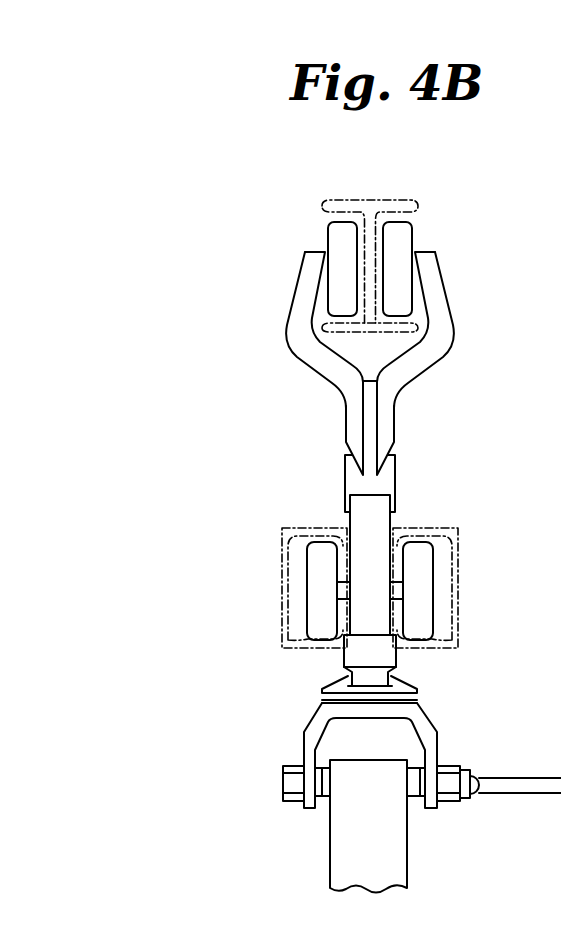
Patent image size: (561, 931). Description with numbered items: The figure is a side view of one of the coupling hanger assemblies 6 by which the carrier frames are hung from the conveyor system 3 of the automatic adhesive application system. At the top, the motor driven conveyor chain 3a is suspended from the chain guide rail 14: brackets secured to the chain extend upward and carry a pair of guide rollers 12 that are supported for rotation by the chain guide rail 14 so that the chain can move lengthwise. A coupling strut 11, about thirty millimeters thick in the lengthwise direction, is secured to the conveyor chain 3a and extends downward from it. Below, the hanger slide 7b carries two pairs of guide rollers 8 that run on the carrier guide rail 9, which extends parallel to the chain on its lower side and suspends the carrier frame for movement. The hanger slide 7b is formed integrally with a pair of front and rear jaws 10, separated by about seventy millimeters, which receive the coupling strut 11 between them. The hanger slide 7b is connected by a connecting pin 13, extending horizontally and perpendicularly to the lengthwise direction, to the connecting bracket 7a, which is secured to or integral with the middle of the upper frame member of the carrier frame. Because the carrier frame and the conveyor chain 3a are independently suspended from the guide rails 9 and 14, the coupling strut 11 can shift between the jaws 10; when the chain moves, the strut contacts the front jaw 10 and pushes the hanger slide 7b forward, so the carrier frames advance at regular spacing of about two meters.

The chain guide rail 14 is at (425, 205).
The guide rollers 12 is at (329, 236).
The conveyor system 3 is at (462, 376).
The conveyor chain 3a is at (391, 405).
The coupling strut 11 is at (345, 483).
The jaws 10 is at (381, 521).
The carrier guide rail 9 is at (283, 534).
The guide rollers 8 is at (307, 582).
The hanger slide 7b is at (418, 687).
The connecting pin 13 is at (518, 778).
The connecting bracket 7a is at (330, 852).
The coupling hanger assembly 6 is at (432, 842).